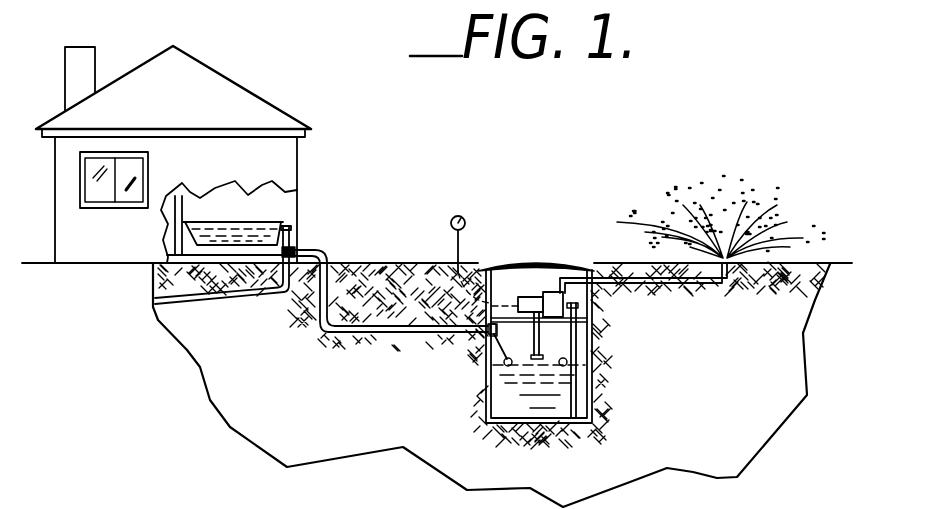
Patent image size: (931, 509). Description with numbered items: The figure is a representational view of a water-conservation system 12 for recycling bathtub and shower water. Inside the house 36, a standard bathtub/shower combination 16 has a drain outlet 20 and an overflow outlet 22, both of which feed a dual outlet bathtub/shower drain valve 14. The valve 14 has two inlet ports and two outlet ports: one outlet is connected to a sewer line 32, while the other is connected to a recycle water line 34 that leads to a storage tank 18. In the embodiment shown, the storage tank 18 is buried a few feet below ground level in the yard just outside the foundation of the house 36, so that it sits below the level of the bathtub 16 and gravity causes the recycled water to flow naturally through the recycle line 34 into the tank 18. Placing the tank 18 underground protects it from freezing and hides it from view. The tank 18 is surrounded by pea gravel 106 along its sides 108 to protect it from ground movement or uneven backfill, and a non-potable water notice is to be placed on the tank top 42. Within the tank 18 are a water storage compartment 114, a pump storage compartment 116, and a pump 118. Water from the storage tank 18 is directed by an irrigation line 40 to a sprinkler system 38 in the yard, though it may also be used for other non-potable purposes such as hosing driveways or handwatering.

The water-conservation system 12 is at (552, 205).
The dual outlet bathtub/shower drain valve 14 is at (297, 246).
The bathtub/shower combination 16 is at (222, 230).
The storage tank 18 is at (595, 350).
The drain outlet 20 is at (285, 251).
The overflow outlet 22 is at (283, 225).
The sewer line 32 is at (220, 300).
The recycle water line 34 is at (387, 331).
The house 36 is at (253, 92).
The sprinkler system 38 is at (735, 255).
The irrigation line 40 is at (640, 300).
The tank top 42 is at (557, 262).
The pea gravel 106 is at (602, 413).
The tank sides 108 is at (596, 395).
The water storage compartment 114 is at (513, 338).
The pump storage compartment 116 is at (538, 270).
The pump 118 is at (531, 297).